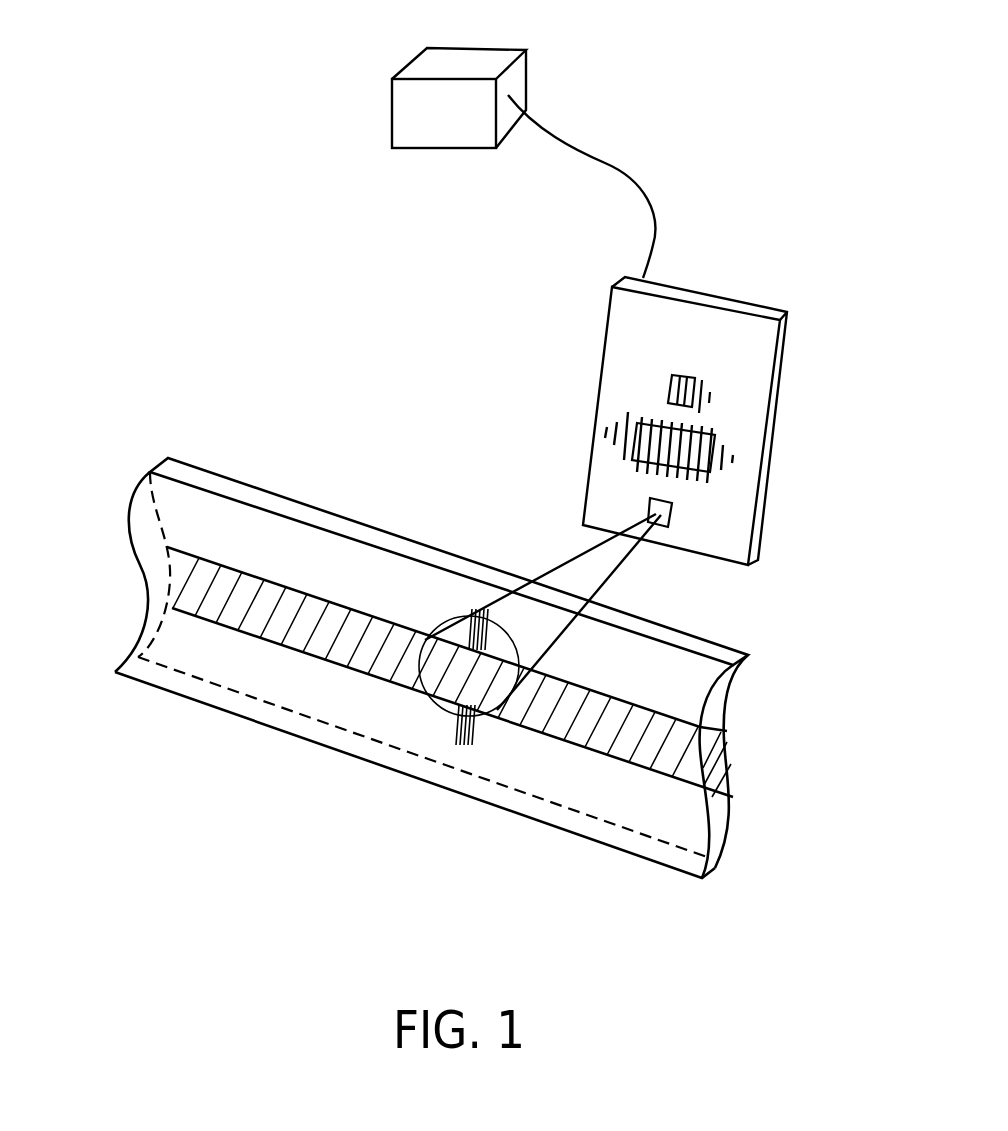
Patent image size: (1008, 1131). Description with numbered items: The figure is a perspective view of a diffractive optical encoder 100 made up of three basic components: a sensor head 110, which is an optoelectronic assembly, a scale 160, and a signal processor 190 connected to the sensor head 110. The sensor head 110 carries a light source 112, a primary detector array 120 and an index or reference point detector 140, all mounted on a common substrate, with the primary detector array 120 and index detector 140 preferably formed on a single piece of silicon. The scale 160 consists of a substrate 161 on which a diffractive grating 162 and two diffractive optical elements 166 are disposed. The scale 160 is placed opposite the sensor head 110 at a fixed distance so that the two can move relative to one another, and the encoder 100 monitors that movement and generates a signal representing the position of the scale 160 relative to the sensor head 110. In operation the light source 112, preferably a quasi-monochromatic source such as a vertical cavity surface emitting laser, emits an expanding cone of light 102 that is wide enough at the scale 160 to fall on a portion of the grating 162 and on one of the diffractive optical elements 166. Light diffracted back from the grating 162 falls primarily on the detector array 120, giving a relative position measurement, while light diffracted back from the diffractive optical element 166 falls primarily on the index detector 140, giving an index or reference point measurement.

The diffractive optical encoder 100 is at (415, 284).
The signal processor 190 is at (513, 45).
The sensor head 110 is at (718, 282).
The index detector 140 is at (687, 375).
The primary detector array 120 is at (713, 432).
The light source 112 is at (673, 513).
The cone of light 102 is at (627, 567).
The scale 160 is at (436, 668).
The substrate 161 is at (728, 828).
The diffractive grating 162 is at (732, 747).
The diffractive optical elements 166 is at (472, 612).